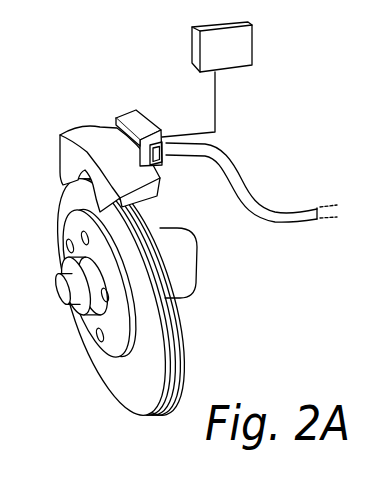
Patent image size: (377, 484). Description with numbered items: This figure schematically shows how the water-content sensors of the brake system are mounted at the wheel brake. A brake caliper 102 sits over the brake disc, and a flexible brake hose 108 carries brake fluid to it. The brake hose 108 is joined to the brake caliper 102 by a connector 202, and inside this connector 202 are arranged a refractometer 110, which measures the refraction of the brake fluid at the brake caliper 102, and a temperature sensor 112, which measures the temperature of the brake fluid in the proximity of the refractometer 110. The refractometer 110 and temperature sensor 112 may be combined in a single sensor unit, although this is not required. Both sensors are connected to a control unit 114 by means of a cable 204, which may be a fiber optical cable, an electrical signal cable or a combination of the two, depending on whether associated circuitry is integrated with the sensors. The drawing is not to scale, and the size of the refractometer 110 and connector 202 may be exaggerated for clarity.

The brake caliper 102 is at (97, 137).
The connector 202 is at (205, 150).
The refractometer 110 is at (226, 199).
The temperature sensor 112 is at (170, 163).
The control unit 114 is at (245, 47).
The cable 204 is at (215, 103).
The brake hose 108 is at (261, 203).